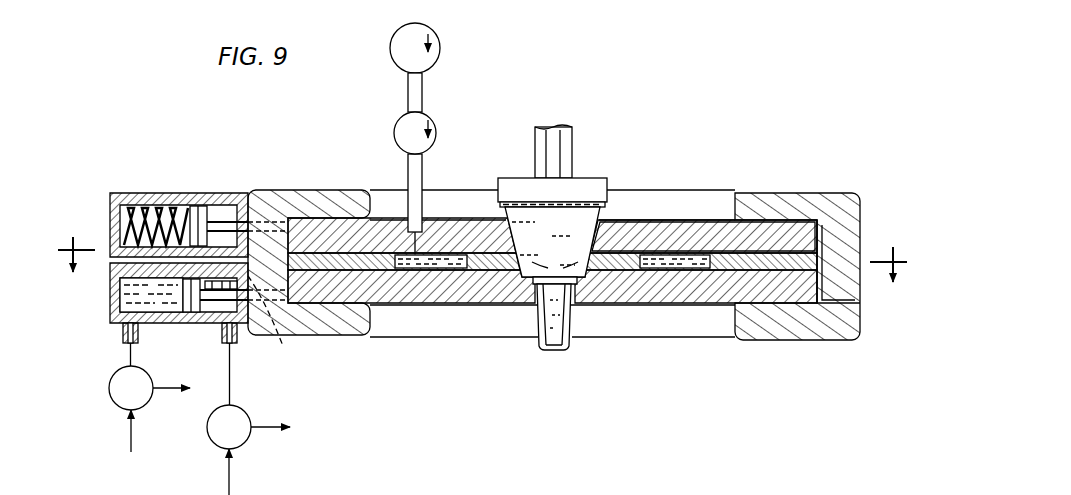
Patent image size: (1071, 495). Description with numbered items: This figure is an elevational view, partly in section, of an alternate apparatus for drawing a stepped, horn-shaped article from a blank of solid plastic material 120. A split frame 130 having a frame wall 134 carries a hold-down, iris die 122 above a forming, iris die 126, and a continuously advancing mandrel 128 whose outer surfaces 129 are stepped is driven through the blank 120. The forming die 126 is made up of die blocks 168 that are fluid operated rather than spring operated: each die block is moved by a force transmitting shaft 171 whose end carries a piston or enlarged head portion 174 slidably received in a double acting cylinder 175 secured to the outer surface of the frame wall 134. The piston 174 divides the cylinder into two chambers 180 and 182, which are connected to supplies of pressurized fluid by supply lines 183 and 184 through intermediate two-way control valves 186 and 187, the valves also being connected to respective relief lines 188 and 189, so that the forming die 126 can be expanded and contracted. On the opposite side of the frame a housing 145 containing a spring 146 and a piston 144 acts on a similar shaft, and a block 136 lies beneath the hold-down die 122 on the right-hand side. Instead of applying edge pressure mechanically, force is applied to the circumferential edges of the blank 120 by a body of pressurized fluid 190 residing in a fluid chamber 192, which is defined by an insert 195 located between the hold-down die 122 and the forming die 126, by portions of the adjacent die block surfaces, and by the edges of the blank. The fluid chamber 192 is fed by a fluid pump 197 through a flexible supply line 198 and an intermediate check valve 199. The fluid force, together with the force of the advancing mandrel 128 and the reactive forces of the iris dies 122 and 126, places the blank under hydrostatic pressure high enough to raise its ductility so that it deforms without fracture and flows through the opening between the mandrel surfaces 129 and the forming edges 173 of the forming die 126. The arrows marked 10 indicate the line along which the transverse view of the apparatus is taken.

The section line 10 is at (482, 278).
The blank of solid plastic material 120 is at (622, 262).
The hold-down iris die 122 is at (456, 216).
The forming iris die 126 is at (667, 308).
The mandrel 128 is at (593, 173).
The outer surfaces of the mandrel 129 is at (607, 213).
The split frame 130 is at (849, 187).
The frame wall 134 is at (840, 233).
The right insert block 136 is at (762, 233).
The spring piston 144 is at (199, 216).
The spring housing 145 is at (114, 186).
The spring 146 is at (160, 212).
The die blocks 168 is at (470, 284).
The force transmitting shaft 171 is at (281, 323).
The forming edges 173 is at (555, 251).
The piston 174 is at (190, 313).
The double acting cylinder 175 is at (112, 329).
The chamber 180 is at (125, 296).
The chamber 182 is at (209, 316).
The supply line 183 is at (122, 352).
The supply line 184 is at (231, 387).
The two-way control valve 186 is at (118, 406).
The two-way control valve 187 is at (220, 444).
The relief line 188 is at (160, 397).
The relief line 189 is at (260, 433).
The body of pressurized fluid 190 is at (680, 271).
The fluid chamber 192 is at (437, 264).
The insert 195 is at (337, 260).
The fluid pump 197 is at (441, 46).
The flexible supply line 198 is at (408, 165).
The check valve 199 is at (430, 122).